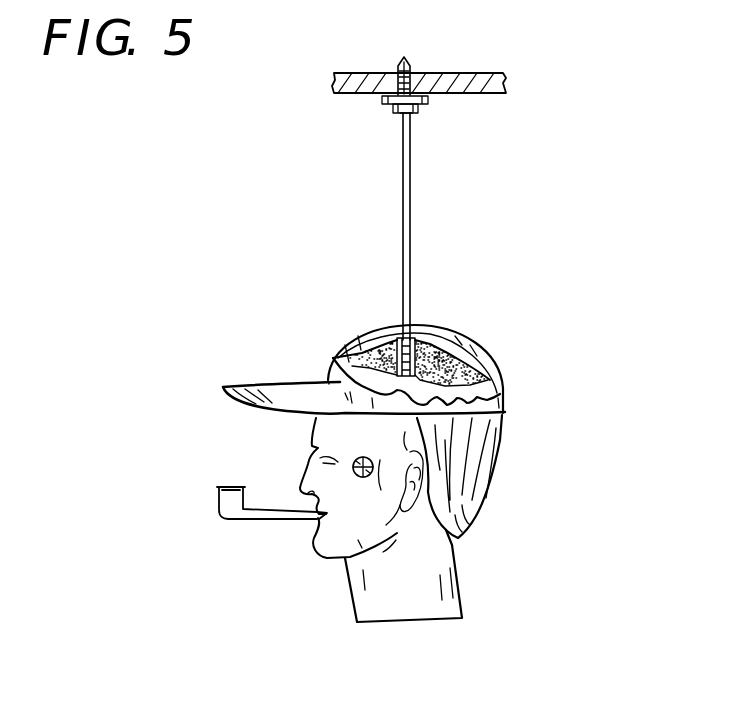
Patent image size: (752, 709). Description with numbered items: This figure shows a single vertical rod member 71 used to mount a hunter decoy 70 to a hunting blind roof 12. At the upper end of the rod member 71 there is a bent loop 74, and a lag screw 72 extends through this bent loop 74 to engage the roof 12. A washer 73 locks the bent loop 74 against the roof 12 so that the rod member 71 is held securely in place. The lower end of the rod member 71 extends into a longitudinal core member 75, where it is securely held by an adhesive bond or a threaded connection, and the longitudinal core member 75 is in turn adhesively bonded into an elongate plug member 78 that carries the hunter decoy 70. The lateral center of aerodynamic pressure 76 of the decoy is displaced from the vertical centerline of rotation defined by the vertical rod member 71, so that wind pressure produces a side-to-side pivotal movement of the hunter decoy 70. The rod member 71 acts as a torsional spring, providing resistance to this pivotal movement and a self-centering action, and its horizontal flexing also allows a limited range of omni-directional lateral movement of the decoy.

The hunting blind roof 12 is at (457, 72).
The hunter decoy 70 is at (540, 326).
The vertical rod member 71 is at (412, 245).
The lag screw 72 is at (416, 116).
The washer 73 is at (430, 103).
The bent loop 74 is at (378, 97).
The longitudinal core member 75 is at (420, 340).
The lateral center of aerodynamic pressure 76 is at (353, 466).
The elongate plug member 78 is at (510, 443).